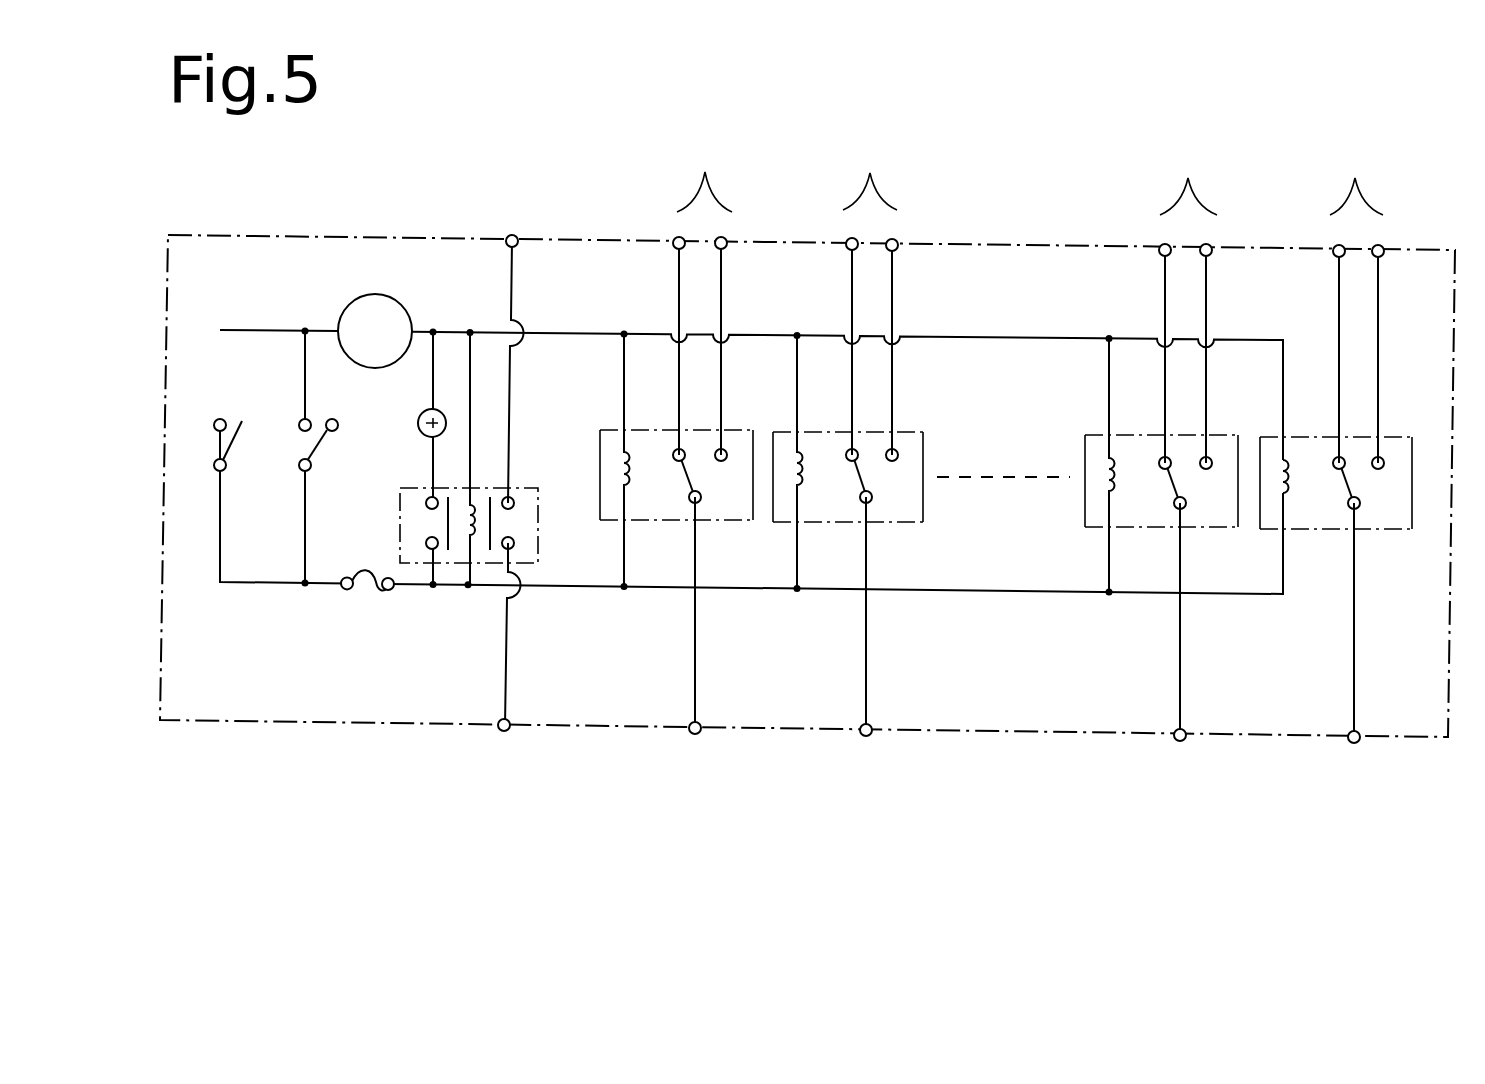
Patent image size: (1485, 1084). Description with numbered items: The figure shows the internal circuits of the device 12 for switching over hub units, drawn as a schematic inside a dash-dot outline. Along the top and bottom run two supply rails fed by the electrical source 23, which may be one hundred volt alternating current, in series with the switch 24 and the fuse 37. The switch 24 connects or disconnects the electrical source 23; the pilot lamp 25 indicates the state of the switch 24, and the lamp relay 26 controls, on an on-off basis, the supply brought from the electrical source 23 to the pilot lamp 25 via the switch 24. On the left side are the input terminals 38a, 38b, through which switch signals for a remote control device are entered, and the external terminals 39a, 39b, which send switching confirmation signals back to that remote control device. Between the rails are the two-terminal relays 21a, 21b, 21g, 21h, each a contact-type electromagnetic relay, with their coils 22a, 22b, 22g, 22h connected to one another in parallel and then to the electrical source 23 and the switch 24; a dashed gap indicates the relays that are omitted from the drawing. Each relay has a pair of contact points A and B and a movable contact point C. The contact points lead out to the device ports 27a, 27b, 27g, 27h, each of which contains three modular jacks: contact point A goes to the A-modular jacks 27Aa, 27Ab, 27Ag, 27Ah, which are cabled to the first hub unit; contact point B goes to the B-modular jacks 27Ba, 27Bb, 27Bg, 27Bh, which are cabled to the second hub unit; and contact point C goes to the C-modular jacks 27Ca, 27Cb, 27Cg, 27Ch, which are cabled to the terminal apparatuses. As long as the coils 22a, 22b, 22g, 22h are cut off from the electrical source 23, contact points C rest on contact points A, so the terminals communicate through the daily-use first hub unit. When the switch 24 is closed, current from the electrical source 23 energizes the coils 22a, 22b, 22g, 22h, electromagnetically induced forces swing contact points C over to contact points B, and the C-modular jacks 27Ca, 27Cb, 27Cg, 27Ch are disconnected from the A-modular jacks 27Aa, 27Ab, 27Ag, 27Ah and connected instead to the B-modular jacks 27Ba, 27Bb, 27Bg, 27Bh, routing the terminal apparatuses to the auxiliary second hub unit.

The device for switching over hub units 12 is at (355, 723).
The two-terminal relay 21a is at (717, 522).
The two-terminal relay 21b is at (893, 523).
The two-terminal relay 21g is at (1202, 528).
The two-terminal relay 21h is at (1375, 529).
The coil 22a is at (615, 490).
The coil 22b is at (789, 490).
The coil 22g is at (1098, 503).
The coil 22h is at (1272, 503).
The electrical source 23 is at (355, 303).
The switch 24 is at (300, 449).
The pilot lamp 25 is at (422, 433).
The lamp relay 26 is at (527, 483).
The device port 27a is at (698, 812).
The device port 27b is at (861, 812).
The device port 27g is at (1181, 817).
The device port 27h is at (1355, 817).
The A-modular jack 27Aa is at (672, 334).
The B-modular jack 27Ba is at (738, 334).
The C-modular jack 27Ca is at (693, 631).
The A-modular jack 27Ab is at (837, 334).
The B-modular jack 27Bb is at (902, 334).
The C-modular jack 27Cb is at (857, 631).
The A-modular jack 27Ag is at (1157, 341).
The B-modular jack 27Bg is at (1223, 341).
The C-modular jack 27Cg is at (1178, 637).
The A-modular jack 27Ah is at (1323, 341).
The B-modular jack 27Bh is at (1390, 341).
The C-modular jack 27Ch is at (1350, 638).
The fuse 37 is at (375, 597).
The input terminal 38a is at (214, 419).
The input terminal 38b is at (214, 471).
The external terminal 39a is at (515, 232).
The external terminal 39b is at (508, 736).